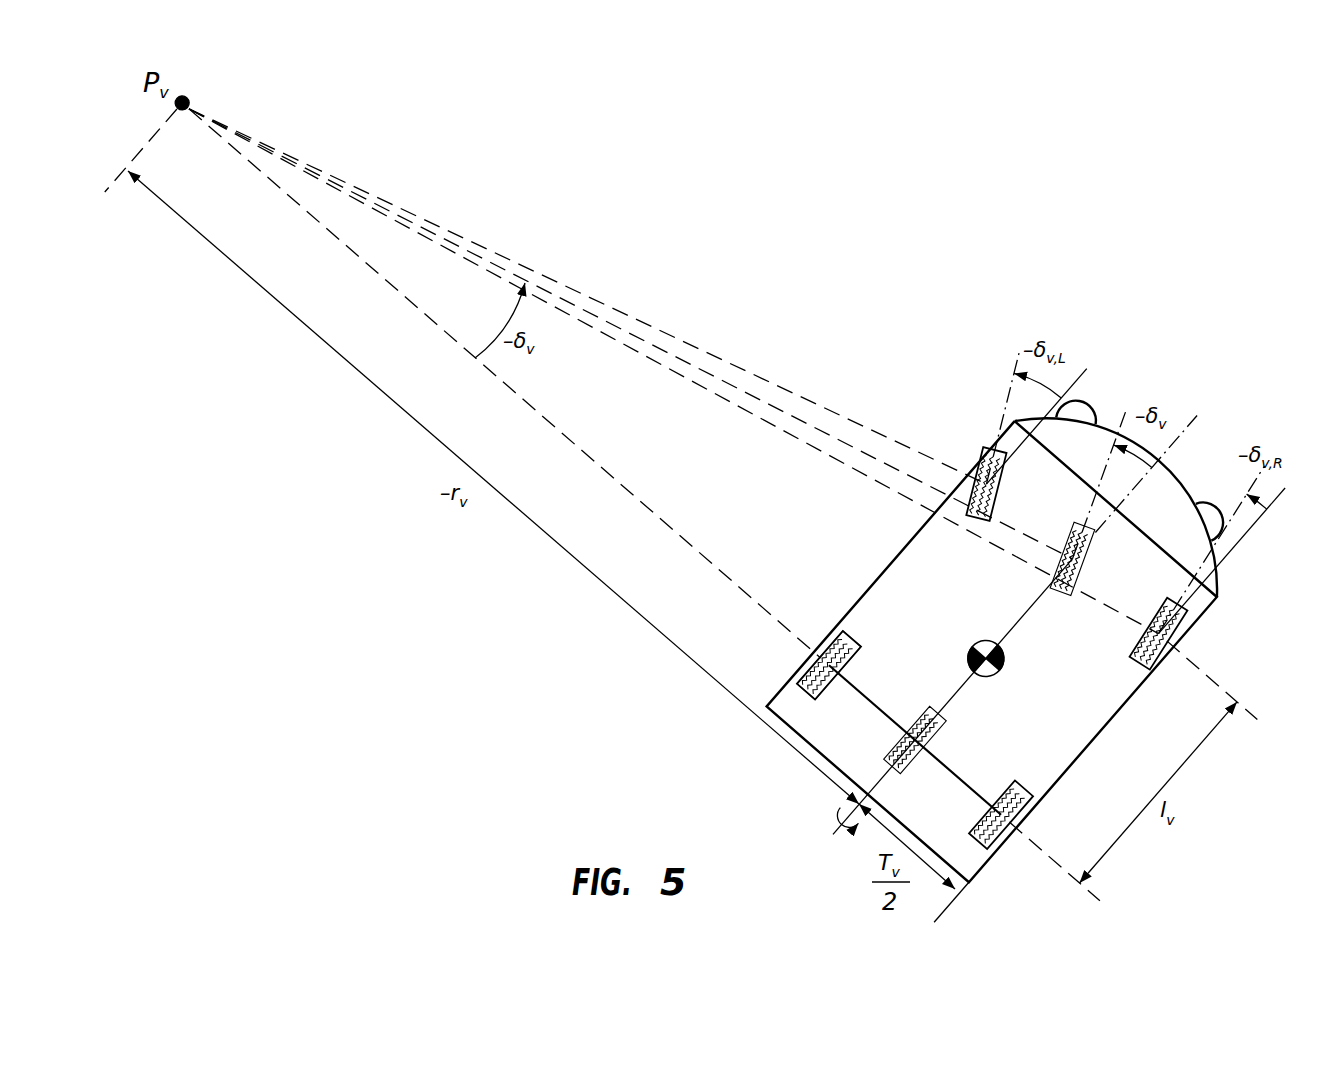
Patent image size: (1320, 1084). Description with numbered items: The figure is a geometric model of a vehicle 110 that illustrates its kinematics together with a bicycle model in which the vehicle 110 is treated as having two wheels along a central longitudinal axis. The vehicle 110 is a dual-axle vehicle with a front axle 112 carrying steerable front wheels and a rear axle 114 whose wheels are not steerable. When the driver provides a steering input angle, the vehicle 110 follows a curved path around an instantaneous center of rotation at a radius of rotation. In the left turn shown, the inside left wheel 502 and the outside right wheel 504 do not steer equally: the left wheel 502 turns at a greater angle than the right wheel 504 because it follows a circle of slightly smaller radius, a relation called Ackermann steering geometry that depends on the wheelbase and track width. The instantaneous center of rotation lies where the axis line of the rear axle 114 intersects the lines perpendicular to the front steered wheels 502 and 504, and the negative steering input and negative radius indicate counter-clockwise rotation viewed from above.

The vehicle 110 is at (1024, 649).
The front axle 112 is at (1050, 530).
The rear axle 114 is at (876, 702).
The left wheel 502 is at (977, 455).
The right wheel 504 is at (1186, 629).